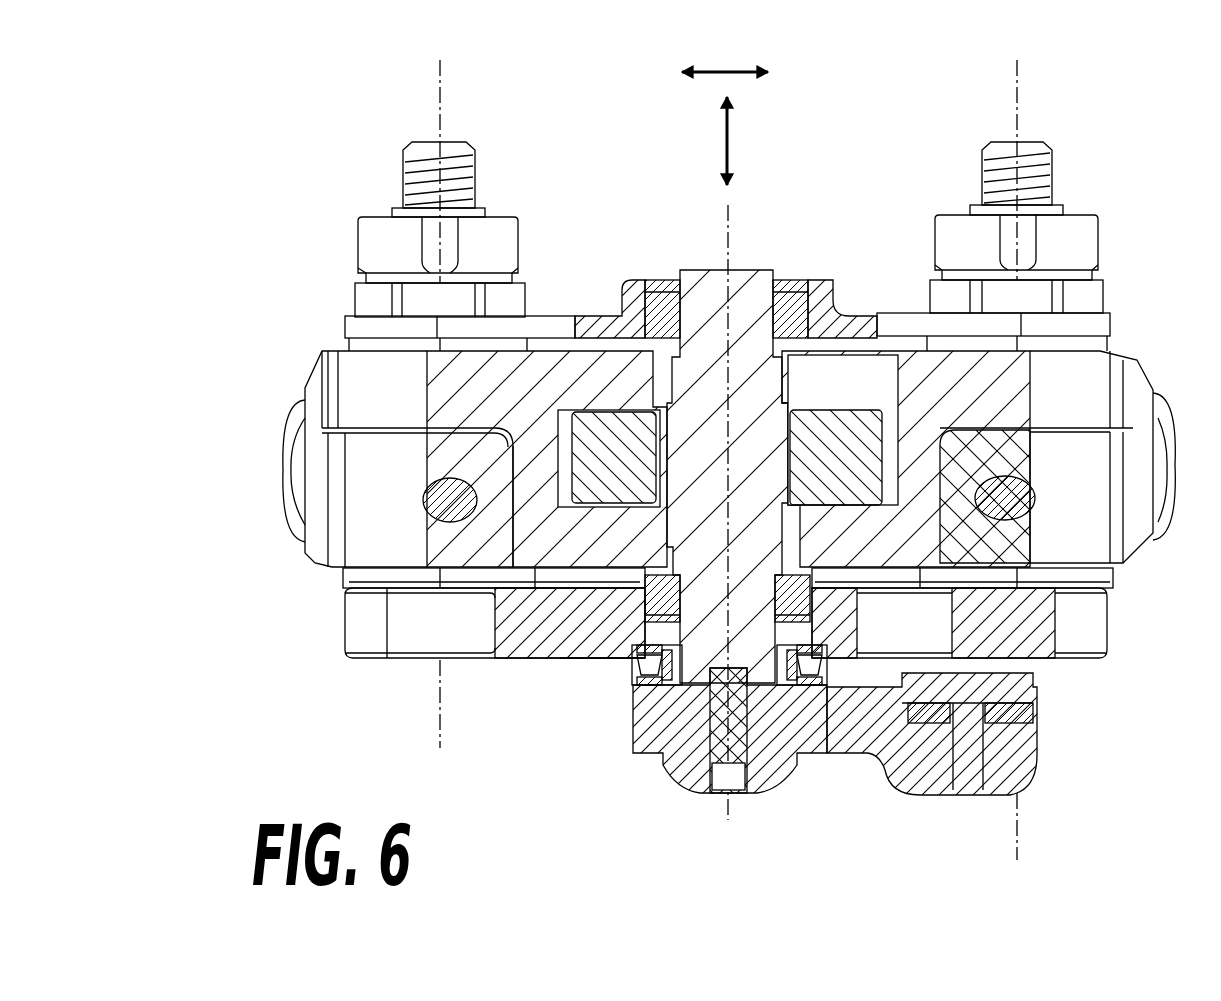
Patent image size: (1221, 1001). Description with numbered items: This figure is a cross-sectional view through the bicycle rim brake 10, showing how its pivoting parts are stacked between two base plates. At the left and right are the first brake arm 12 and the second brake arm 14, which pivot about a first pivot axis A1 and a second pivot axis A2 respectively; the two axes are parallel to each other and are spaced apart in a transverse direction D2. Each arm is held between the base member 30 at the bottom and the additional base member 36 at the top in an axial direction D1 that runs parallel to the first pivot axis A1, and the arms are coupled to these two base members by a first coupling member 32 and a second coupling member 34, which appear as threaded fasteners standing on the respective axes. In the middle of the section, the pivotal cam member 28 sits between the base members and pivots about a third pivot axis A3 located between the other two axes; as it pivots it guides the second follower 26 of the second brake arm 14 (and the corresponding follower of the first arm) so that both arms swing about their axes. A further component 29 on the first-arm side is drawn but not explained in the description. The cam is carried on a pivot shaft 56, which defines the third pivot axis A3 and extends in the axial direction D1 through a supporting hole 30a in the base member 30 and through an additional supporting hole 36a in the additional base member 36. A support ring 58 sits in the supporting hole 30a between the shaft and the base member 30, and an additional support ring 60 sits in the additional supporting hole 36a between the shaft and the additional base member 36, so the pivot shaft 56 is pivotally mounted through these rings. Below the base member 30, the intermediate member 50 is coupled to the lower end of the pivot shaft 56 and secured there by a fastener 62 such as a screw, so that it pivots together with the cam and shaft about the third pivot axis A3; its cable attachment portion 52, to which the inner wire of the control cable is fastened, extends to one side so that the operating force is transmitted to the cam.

The bicycle rim brake 10 is at (714, 437).
The first brake arm 12 is at (320, 573).
The second brake arm 14 is at (1133, 567).
The second follower 26 is at (868, 428).
The pivotal cam member 28 is at (797, 440).
The elastic member 29 is at (587, 443).
The base member 30 is at (515, 663).
The supporting hole 30a is at (598, 657).
The first coupling member 32 is at (408, 140).
The second coupling member 34 is at (1045, 140).
The additional base member 36 is at (607, 313).
The additional supporting hole 36a is at (663, 313).
The intermediate member 50 is at (630, 745).
The cable attachment portion 52 is at (1038, 713).
The pivot shaft 56 is at (694, 267).
The support ring 58 is at (818, 612).
The additional support ring 60 is at (800, 310).
The fastener 62 is at (705, 800).
The first pivot axis A1 is at (440, 73).
The second pivot axis A2 is at (1015, 72).
The third pivot axis A3 is at (728, 217).
The axial direction D1 is at (730, 140).
The transverse direction D2 is at (717, 72).